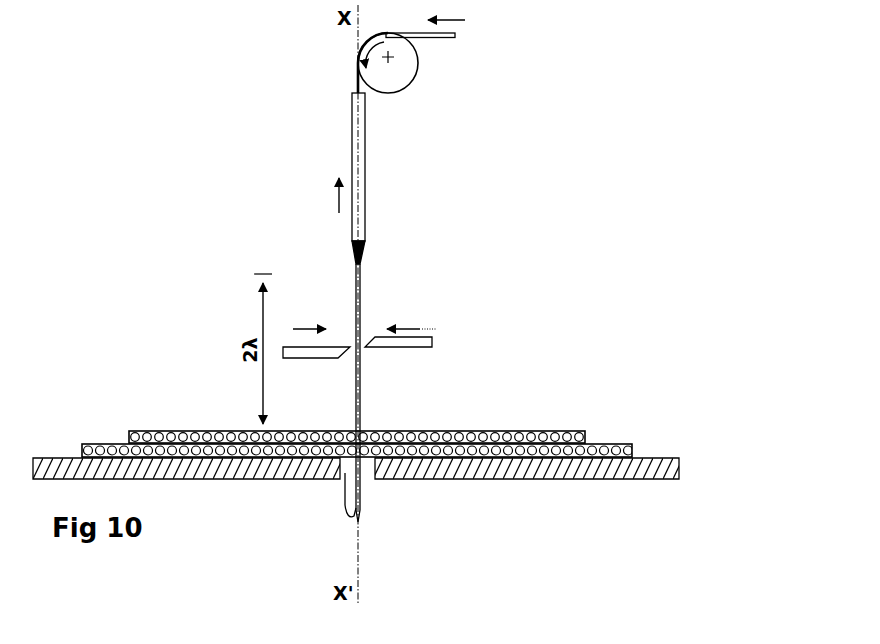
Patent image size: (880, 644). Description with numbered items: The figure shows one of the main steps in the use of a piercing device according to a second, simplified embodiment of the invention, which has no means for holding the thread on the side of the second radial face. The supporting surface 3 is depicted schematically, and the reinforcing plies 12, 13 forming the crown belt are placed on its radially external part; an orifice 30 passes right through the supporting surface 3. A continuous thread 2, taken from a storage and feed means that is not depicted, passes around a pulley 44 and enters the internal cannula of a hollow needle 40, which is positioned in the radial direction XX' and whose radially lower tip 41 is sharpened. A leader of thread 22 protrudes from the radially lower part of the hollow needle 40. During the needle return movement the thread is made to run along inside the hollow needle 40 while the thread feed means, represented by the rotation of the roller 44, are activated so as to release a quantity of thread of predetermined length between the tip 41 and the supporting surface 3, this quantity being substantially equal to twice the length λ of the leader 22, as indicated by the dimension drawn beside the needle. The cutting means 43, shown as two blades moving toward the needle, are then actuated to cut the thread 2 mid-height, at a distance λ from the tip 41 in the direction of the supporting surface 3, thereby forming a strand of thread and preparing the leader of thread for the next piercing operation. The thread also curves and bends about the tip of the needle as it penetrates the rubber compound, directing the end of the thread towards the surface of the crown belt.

The continuous thread 2 is at (442, 38).
The pulley 44 is at (402, 83).
The hollow needle 40 is at (366, 190).
The tip of the needle 41 is at (364, 258).
The cutting means 43 is at (417, 342).
The reinforcing ply 12 is at (588, 437).
The reinforcing ply 13 is at (635, 451).
The supporting surface 3 is at (680, 468).
The leader of thread 22 is at (338, 547).
The orifice 30 is at (365, 473).